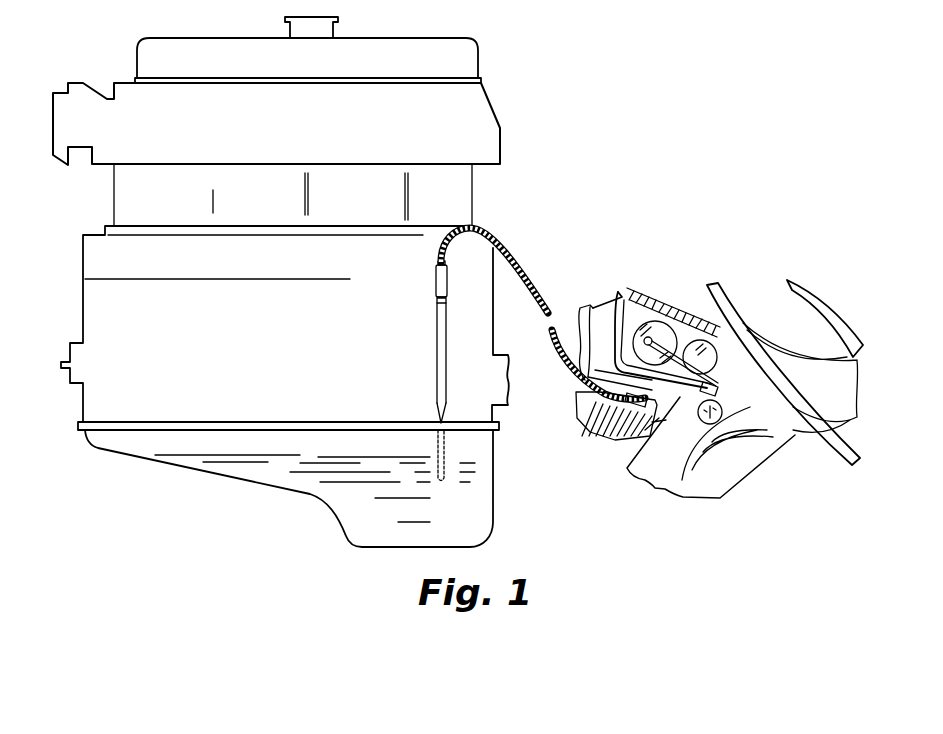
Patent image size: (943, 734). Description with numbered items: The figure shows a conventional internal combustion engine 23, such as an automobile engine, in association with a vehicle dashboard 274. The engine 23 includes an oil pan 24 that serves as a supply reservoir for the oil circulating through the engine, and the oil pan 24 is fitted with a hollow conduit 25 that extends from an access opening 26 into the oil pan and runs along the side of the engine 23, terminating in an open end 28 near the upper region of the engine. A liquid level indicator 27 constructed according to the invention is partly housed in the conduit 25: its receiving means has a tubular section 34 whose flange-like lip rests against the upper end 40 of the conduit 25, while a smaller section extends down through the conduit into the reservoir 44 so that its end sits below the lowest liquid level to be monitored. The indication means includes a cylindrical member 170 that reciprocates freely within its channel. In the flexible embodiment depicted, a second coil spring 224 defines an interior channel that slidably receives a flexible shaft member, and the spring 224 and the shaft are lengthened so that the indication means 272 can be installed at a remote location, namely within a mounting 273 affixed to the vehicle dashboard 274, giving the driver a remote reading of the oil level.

The internal combustion engine 23 is at (81, 311).
The oil pan 24 is at (268, 491).
The reservoir 44 is at (342, 456).
The hollow conduit 25 is at (436, 339).
The access opening 26 is at (436, 409).
The tubular section 34 is at (436, 281).
The upper end of conduit 40 is at (435, 312).
The liquid level indicator 27 is at (446, 283).
The open end 28 is at (447, 298).
The cylindrical member 170 is at (484, 229).
The second coil spring 224 is at (541, 284).
The vehicle dashboard 274 is at (633, 292).
The mounting 273 is at (594, 436).
The indication means 272 is at (645, 405).